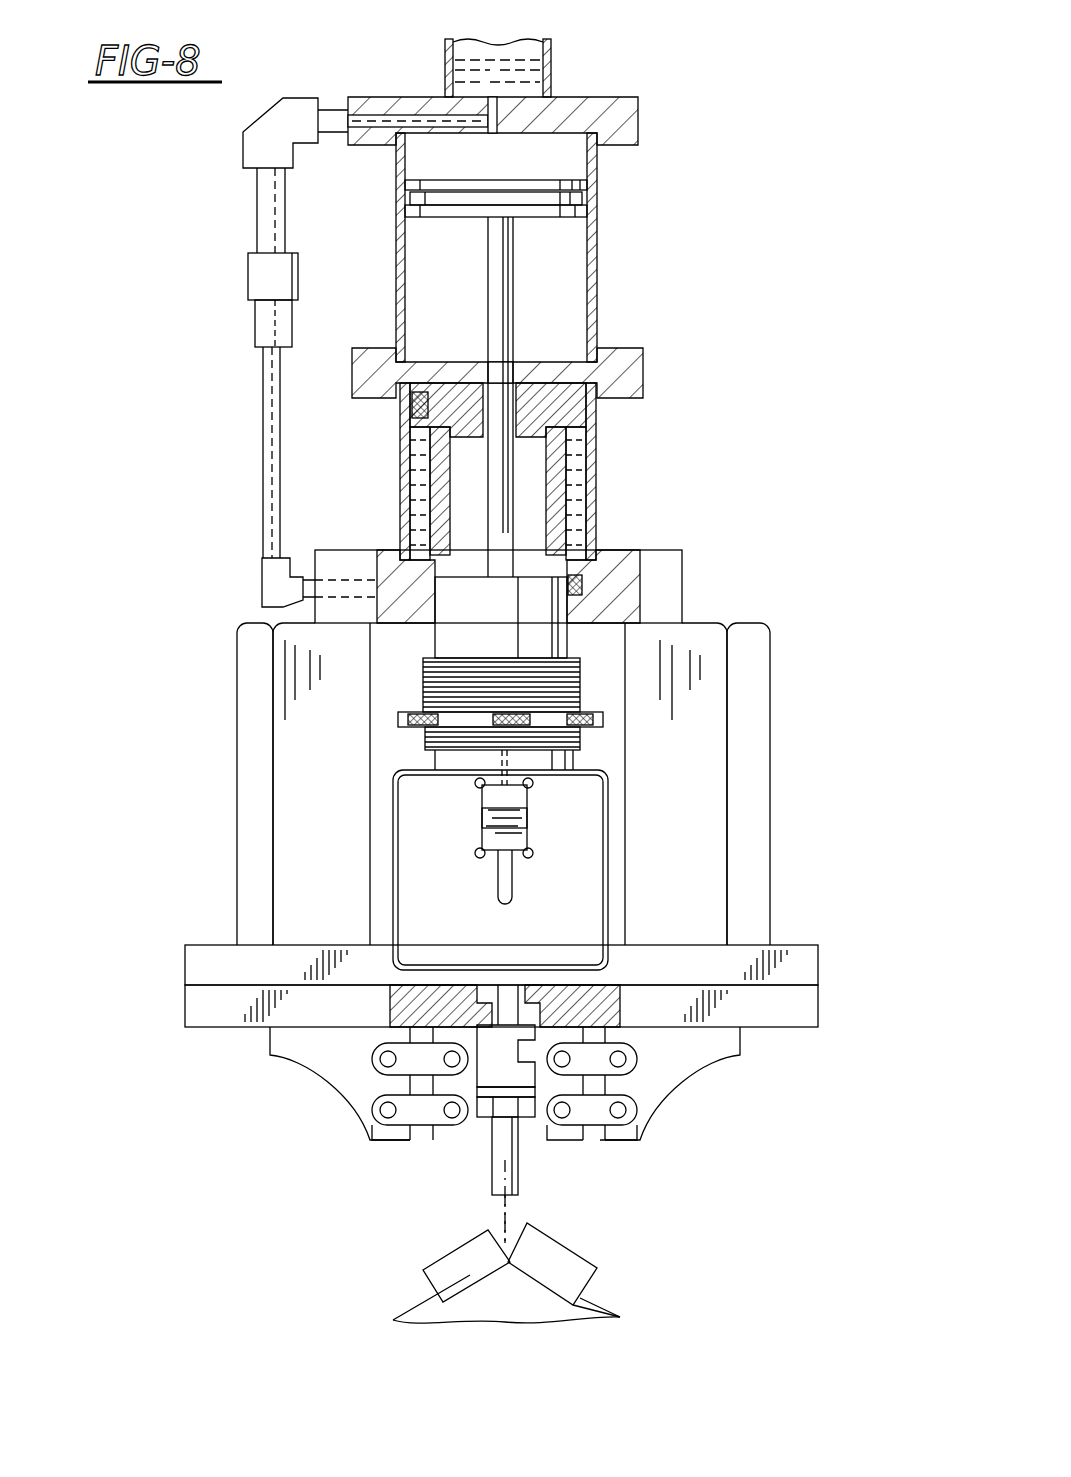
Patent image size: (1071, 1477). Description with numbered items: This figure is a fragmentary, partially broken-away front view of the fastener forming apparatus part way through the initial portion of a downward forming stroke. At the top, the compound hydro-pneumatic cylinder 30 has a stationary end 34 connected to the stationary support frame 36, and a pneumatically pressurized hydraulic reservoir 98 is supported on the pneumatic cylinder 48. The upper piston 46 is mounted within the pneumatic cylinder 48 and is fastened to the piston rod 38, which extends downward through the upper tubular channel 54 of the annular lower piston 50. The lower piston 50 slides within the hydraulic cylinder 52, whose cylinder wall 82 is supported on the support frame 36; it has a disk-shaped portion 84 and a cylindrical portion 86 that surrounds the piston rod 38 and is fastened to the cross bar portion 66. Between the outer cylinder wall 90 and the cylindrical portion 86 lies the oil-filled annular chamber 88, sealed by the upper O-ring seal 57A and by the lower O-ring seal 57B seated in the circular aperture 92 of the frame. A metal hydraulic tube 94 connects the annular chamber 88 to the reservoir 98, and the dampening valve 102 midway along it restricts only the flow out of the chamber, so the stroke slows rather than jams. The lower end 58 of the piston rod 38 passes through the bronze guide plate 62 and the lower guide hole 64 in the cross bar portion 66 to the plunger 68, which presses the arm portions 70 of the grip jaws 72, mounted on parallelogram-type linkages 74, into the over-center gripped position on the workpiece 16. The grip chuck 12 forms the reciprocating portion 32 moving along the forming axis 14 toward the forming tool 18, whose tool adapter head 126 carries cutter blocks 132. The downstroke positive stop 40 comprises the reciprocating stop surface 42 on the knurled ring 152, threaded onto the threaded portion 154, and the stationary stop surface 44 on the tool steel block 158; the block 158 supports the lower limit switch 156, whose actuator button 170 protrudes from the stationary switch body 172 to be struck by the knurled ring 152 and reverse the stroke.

The grip chuck 12 is at (785, 1030).
The forming axis 14 is at (505, 1222).
The workpiece 16 is at (522, 1175).
The forming tool 18 is at (396, 1311).
The compound hydro-pneumatic cylinder 30 is at (605, 333).
The reciprocating portion 32 is at (297, 1058).
The stationary end 34 is at (562, 104).
The stationary support frame 36 is at (655, 553).
The piston rod 38 is at (488, 285).
The downstroke positive stop 40 is at (398, 732).
The reciprocating stop surface 42 is at (600, 737).
The stationary stop surface 44 is at (600, 756).
The upper piston 46 is at (542, 182).
The pneumatic cylinder 48 is at (597, 178).
The annular lower piston 50 is at (450, 632).
The hydraulic cylinder 52 is at (598, 425).
The upper tubular channel 54 is at (420, 425).
The upper O-ring seal 57A is at (410, 405).
The lower O-ring seal 57B is at (610, 562).
The lower end of the piston rod 58 is at (512, 877).
The bronze guide plate 62 is at (192, 965).
The lower guide hole 64 is at (480, 996).
The cross bar portion 66 is at (218, 1020).
The plunger 68 is at (518, 1073).
The arm portions 70 is at (483, 1050).
The grip jaws 72 is at (470, 1130).
The parallelogram-type linkages 74 is at (395, 1120).
The cylinder wall 82 is at (597, 228).
The disk-shaped portion 84 is at (632, 375).
The cylindrical portion 86 is at (598, 470).
The annular chamber 88 is at (422, 496).
The outer cylinder wall 90 is at (410, 460).
The circular aperture 92 is at (622, 598).
The hydraulic tube 94 is at (263, 376).
The hydraulic reservoir 98 is at (545, 50).
The hydraulic dampening valve 102 is at (252, 276).
The tool adapter head 126 is at (566, 1297).
The cutter blocks 132 is at (455, 1257).
The knurled ring 152 is at (566, 695).
The threaded portion 154 is at (430, 672).
The lower limit switch 156 is at (480, 818).
The tool steel block 158 is at (560, 867).
The actuator button 170 is at (500, 760).
The stationary switch body 172 is at (518, 810).